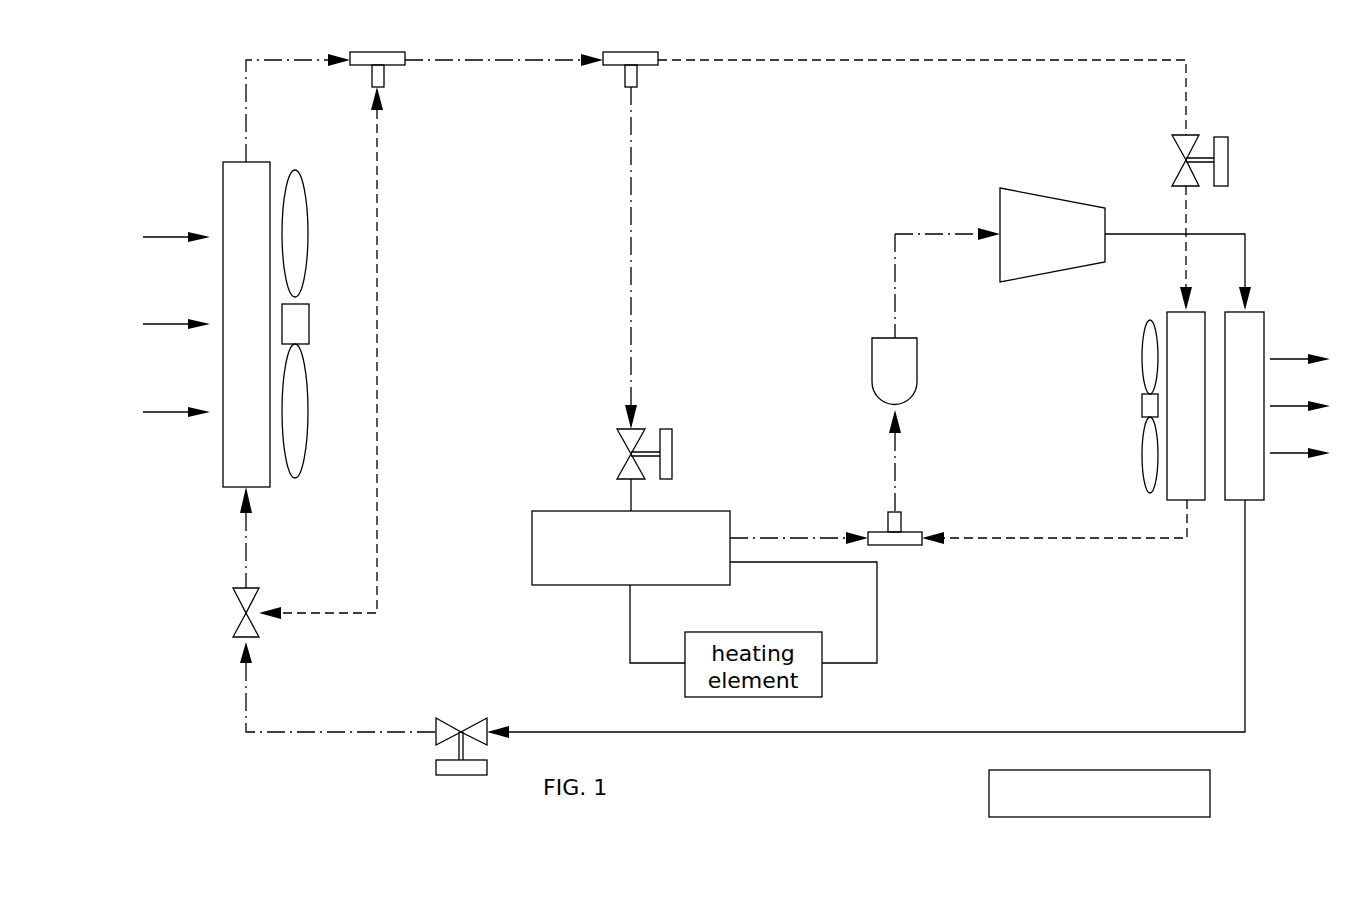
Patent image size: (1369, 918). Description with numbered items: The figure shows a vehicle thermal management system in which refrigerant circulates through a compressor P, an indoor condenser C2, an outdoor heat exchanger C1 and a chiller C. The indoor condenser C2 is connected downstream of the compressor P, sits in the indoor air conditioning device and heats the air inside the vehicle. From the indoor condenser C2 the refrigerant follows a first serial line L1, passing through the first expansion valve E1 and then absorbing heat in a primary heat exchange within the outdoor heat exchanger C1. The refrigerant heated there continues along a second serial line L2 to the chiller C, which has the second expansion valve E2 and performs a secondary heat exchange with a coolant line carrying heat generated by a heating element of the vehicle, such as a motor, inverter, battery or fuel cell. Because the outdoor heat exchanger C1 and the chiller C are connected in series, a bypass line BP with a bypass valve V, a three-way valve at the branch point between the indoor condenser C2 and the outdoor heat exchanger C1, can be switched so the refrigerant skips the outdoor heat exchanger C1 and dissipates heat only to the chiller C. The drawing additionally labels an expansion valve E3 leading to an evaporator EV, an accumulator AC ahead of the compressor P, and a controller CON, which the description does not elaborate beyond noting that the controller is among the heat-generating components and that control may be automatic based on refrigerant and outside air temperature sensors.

The outdoor heat exchanger C1 is at (232, 160).
The first serial line L1 is at (226, 547).
The bypass valve V is at (237, 598).
The bypass line BP is at (378, 318).
The second serial line L2 is at (613, 242).
The second expansion valve E2 is at (623, 462).
The chiller C is at (590, 587).
The compressor P is at (1055, 200).
The accumulator AC is at (917, 369).
The third expansion valve E3 is at (1230, 160).
The evaporator EV is at (1200, 502).
The indoor condenser C2 is at (1254, 502).
The first expansion valve E1 is at (468, 718).
The controller CON is at (1210, 792).